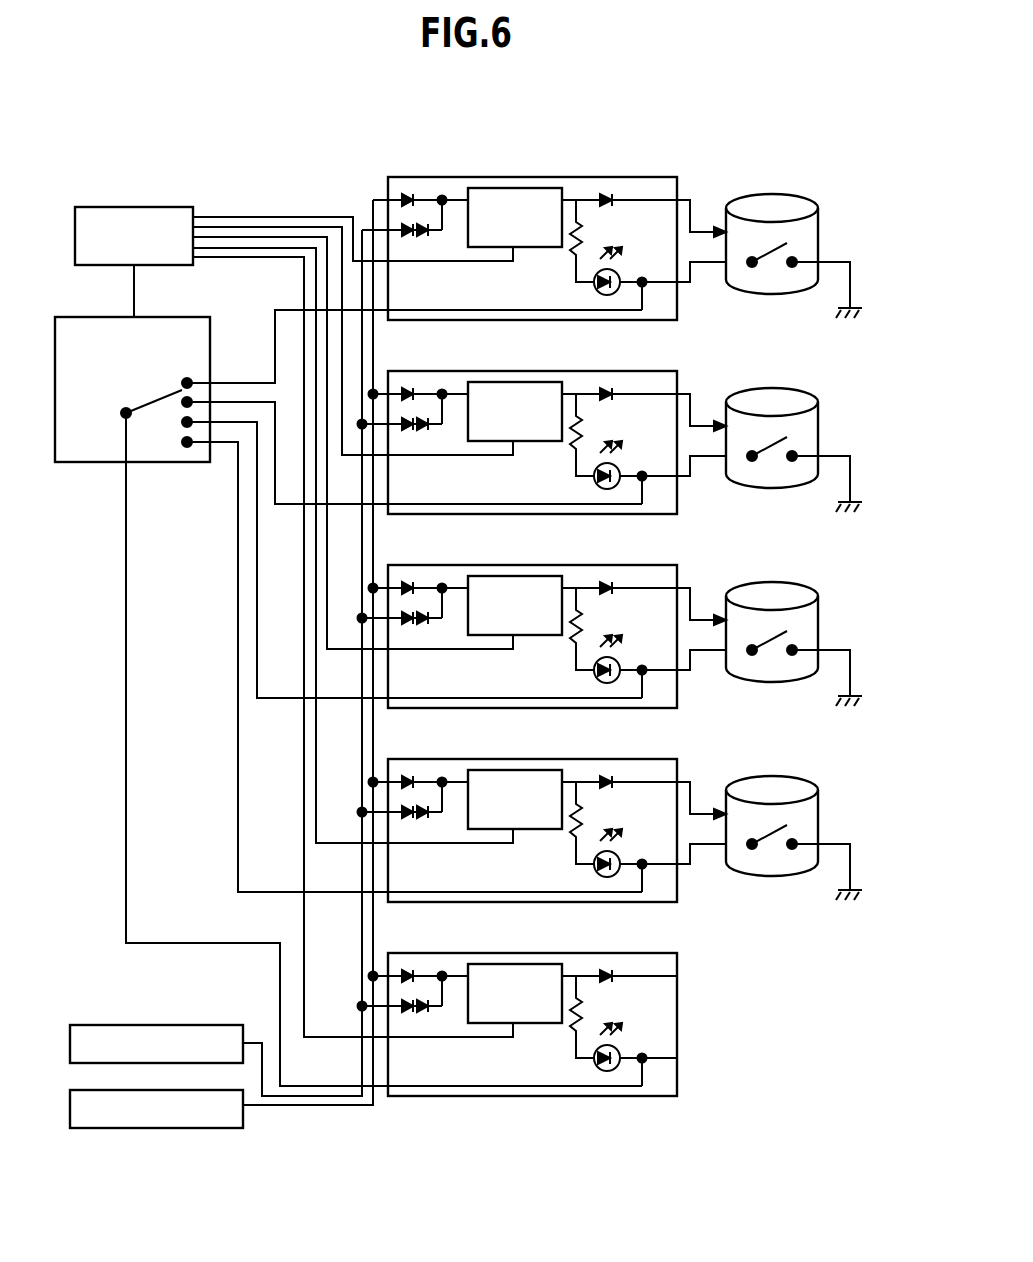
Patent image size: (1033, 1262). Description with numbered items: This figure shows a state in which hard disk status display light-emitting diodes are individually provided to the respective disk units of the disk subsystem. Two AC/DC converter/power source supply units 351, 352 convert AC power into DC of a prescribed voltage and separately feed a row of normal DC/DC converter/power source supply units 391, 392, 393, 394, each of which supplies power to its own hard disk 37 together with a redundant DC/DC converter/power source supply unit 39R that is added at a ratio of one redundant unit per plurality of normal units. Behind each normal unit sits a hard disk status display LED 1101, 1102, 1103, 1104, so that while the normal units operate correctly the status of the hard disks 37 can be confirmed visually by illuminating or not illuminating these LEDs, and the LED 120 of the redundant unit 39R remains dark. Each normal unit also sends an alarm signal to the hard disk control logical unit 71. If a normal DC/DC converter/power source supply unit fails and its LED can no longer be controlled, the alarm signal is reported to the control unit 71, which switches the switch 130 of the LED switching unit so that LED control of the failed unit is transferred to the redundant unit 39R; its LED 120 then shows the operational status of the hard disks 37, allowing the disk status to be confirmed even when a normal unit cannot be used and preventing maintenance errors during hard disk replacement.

The hard disk control logical unit 71 is at (147, 206).
The switch of the LED switching unit 130 is at (168, 317).
The DC/DC converter/power source supply unit 391 is at (566, 189).
The DC/DC converter/power source supply unit 392 is at (566, 383).
The DC/DC converter/power source supply unit 393 is at (566, 577).
The DC/DC converter/power source supply unit 394 is at (566, 771).
The redundant DC/DC converter/power source supply unit 39R is at (566, 965).
The hard disk status display light-emitting diode 1101 is at (617, 268).
The hard disk status display light-emitting diode 1102 is at (617, 462).
The hard disk status display light-emitting diode 1103 is at (617, 656).
The hard disk status display light-emitting diode 1104 is at (617, 850).
The LED of the redundant DC/DC converter/power source supply unit 120 is at (617, 1044).
The hard disk 37 is at (818, 224).
The AC/DC converter/power source supply unit 351 is at (188, 1128).
The AC/DC converter/power source supply unit 352 is at (190, 1025).